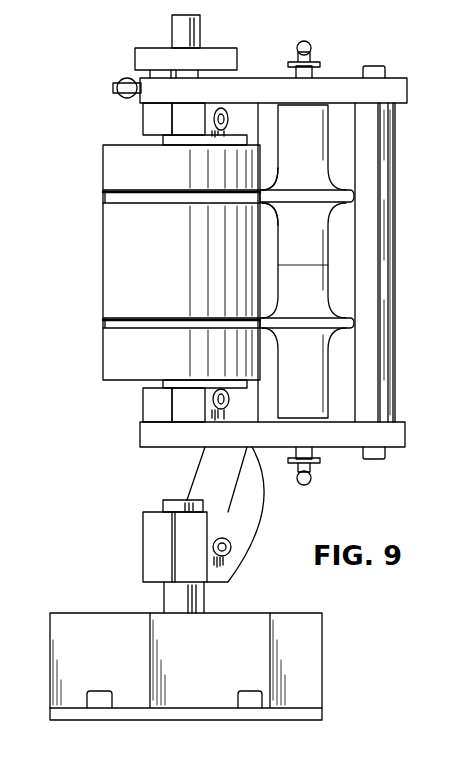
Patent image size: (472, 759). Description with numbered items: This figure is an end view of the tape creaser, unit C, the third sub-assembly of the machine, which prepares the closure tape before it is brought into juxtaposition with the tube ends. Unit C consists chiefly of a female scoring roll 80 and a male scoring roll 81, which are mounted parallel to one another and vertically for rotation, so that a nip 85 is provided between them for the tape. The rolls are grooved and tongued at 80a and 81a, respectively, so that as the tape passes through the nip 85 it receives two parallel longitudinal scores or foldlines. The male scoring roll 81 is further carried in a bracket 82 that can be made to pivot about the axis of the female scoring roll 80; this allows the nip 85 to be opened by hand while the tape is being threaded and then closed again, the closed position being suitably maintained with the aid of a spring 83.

The female scoring roll 80 is at (103, 251).
The grooves of female scoring roll 80a is at (103, 195).
The male scoring roll 81 is at (308, 280).
The tongues of male scoring roll 81a is at (352, 194).
The bracket 82 is at (388, 377).
The spring 83 is at (126, 78).
The nip 85 is at (264, 192).
The tape creaser unit C is at (390, 138).